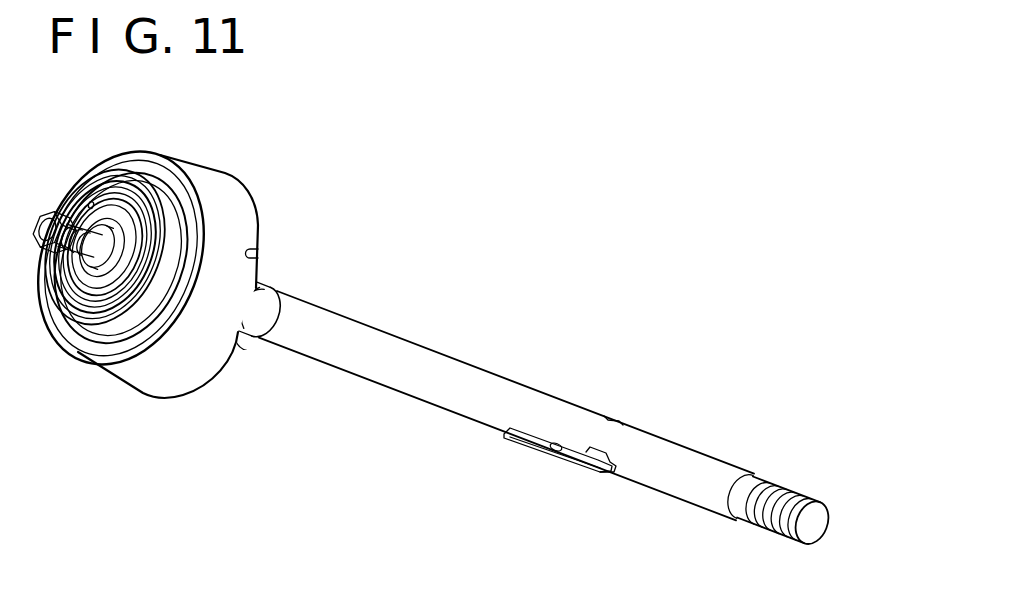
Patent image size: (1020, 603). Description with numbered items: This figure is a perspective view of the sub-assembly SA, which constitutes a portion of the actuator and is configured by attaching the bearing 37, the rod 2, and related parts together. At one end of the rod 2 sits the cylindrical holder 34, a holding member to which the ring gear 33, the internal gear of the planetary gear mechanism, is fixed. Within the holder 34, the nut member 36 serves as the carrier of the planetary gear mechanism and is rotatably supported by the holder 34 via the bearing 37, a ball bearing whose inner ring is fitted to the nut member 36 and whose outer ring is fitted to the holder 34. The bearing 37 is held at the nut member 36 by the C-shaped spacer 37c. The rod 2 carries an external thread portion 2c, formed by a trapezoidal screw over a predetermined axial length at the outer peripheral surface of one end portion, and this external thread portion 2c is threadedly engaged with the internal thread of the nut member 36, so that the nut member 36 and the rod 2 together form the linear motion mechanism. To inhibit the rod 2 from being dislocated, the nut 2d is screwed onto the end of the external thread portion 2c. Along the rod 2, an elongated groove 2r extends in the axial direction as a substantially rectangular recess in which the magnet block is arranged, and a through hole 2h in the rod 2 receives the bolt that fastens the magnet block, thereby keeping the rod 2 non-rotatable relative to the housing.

The sub-assembly SA is at (404, 314).
The rod 2 is at (440, 368).
The external thread portion 2c is at (75, 280).
The nut 2d is at (51, 213).
The elongated groove 2r is at (525, 437).
The through hole 2h is at (555, 450).
The ring gear 33 is at (259, 257).
The holder 34 is at (238, 221).
The nut member 36 is at (94, 278).
The bearing 37 is at (120, 180).
The spacer 37c is at (61, 310).